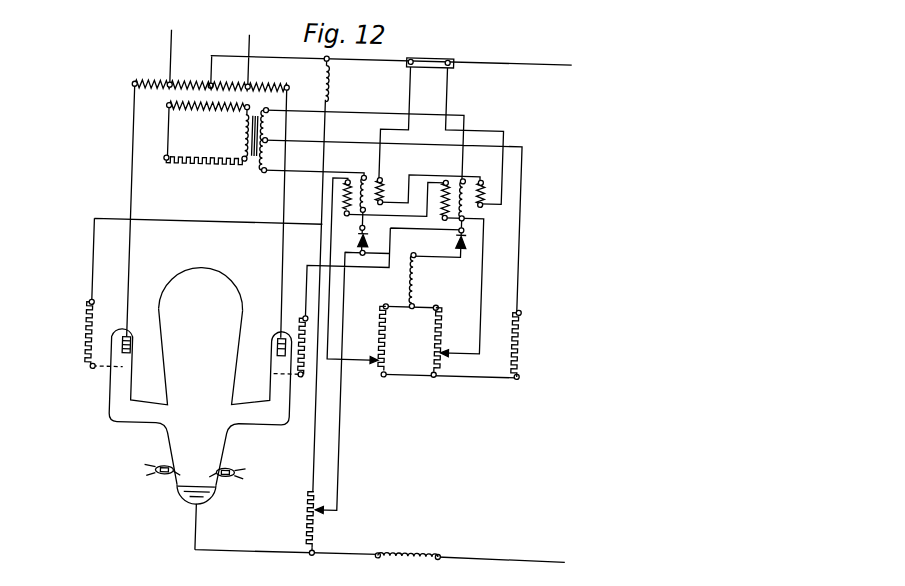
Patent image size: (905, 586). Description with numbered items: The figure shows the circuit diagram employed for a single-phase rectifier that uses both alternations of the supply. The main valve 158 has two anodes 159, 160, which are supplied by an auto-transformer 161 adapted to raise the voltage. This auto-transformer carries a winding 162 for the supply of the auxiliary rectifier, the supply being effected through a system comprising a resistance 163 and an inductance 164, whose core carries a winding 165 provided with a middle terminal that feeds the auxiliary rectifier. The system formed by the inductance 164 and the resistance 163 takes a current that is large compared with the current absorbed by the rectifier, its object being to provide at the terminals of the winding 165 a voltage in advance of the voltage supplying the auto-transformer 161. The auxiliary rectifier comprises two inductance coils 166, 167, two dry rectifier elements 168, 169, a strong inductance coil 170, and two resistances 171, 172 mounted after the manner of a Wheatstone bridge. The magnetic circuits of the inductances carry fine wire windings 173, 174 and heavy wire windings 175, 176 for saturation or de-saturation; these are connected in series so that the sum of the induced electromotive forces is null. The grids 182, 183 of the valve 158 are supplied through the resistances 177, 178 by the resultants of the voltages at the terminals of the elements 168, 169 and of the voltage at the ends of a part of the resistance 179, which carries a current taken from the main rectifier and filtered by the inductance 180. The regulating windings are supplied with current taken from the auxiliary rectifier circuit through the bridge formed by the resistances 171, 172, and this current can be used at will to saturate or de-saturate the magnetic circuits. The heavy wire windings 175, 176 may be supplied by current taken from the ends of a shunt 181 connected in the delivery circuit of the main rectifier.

The valve 158 is at (200, 385).
The anode 159 is at (140, 330).
The anode 160 is at (278, 341).
The auto-transformer 161 is at (171, 72).
The winding 162 is at (217, 112).
The resistance 163 is at (222, 170).
The inductance 164 is at (237, 152).
The winding 165 is at (286, 140).
The inductance coil 166 is at (361, 172).
The inductance coil 167 is at (451, 183).
The dry rectifier element 168 is at (359, 237).
The dry rectifier element 169 is at (456, 235).
The strong inductance coil 170 is at (418, 281).
The resistance 171 is at (400, 338).
The resistance 172 is at (433, 350).
The fine wire winding 173 is at (341, 195).
The fine wire winding 174 is at (466, 207).
The heavy wire winding 175 is at (379, 180).
The heavy wire winding 176 is at (480, 200).
The resistance 177 is at (90, 342).
The resistance 178 is at (303, 323).
The resistance 179 is at (312, 531).
The inductance 180 is at (325, 85).
The shunt 181 is at (422, 60).
The grid 182 is at (125, 375).
The grid 183 is at (268, 386).